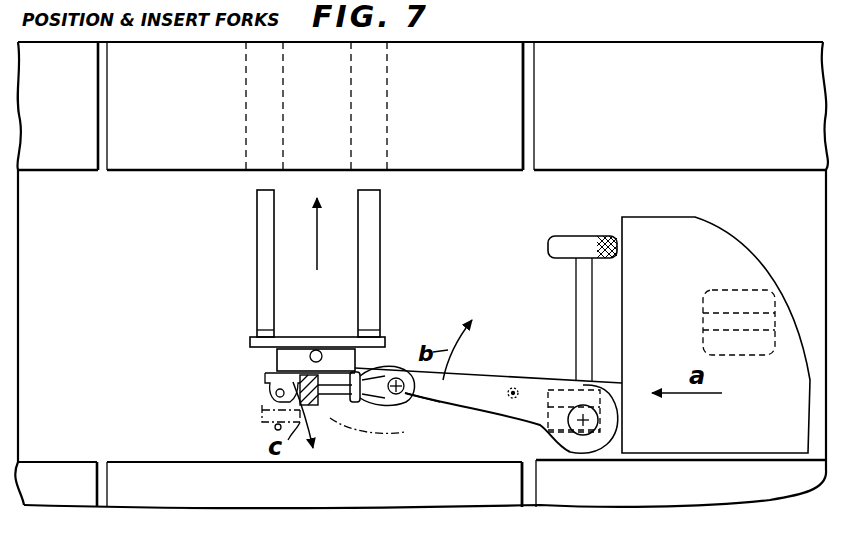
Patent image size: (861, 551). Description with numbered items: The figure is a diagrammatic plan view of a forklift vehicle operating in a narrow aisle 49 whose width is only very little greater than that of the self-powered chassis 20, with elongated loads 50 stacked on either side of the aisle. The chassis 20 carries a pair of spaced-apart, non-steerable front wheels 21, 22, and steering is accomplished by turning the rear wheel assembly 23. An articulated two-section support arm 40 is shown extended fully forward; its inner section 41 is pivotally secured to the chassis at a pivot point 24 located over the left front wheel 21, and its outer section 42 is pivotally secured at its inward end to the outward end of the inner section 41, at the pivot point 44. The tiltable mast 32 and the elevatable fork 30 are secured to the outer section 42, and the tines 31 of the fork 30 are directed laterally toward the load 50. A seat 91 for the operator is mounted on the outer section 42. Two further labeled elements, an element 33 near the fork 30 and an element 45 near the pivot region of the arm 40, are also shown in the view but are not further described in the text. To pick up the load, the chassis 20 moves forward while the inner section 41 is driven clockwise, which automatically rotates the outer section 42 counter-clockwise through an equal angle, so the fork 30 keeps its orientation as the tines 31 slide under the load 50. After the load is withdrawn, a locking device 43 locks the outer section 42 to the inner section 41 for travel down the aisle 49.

The chassis 20 is at (716, 335).
The left front wheel 21 is at (537, 434).
The front wheel 22 is at (553, 250).
The rear wheel assembly 23 is at (704, 322).
The pivot point 24 is at (586, 420).
The fork 30 is at (339, 268).
The tines 31 is at (364, 298).
The mast 32 is at (360, 354).
The pin 33 is at (316, 350).
The articulated two-section support arm 40 is at (506, 414).
The inner section 41 is at (473, 392).
The outer section 42 is at (268, 378).
The locking device 43 is at (517, 391).
The pivot point 44 is at (408, 390).
The pivot boss 45 is at (580, 436).
The narrow aisle 49 is at (66, 304).
The elongated loads 50 is at (155, 153).
The seat 91 is at (328, 408).